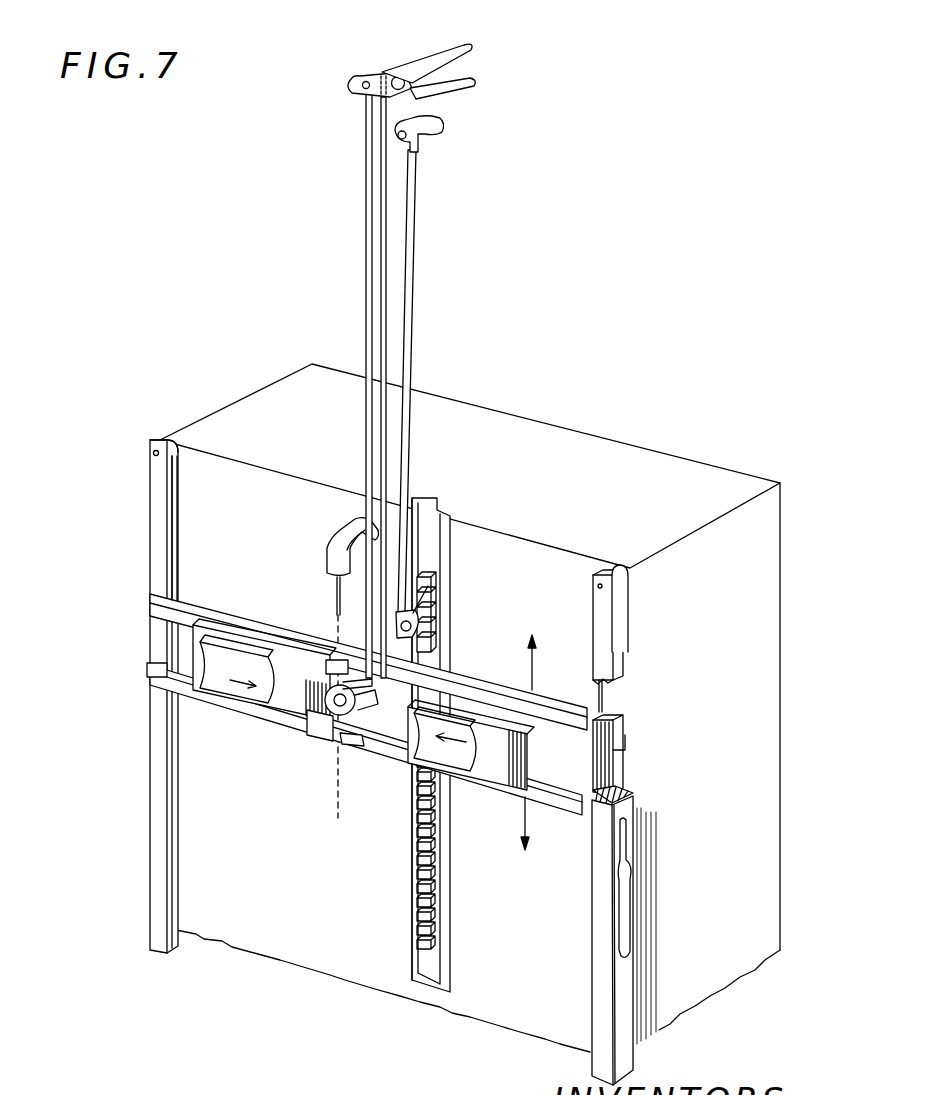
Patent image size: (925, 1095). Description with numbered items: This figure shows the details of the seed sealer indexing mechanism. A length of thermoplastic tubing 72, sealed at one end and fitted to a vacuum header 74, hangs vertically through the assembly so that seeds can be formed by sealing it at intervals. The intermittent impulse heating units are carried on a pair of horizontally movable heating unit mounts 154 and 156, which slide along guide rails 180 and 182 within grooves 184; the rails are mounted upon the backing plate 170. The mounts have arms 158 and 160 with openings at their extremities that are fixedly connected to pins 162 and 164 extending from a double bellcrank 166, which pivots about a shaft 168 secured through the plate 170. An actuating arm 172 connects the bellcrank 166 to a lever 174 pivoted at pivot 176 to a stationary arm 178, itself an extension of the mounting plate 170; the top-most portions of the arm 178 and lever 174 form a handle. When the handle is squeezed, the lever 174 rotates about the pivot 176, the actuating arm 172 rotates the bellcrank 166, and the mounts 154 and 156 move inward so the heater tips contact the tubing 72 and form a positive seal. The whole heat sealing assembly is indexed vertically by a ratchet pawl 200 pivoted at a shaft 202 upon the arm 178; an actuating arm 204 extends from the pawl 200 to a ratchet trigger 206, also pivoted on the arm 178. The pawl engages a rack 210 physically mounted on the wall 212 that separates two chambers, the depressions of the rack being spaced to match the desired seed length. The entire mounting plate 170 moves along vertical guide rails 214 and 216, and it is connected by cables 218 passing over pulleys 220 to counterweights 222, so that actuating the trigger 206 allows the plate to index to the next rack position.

The thermoplastic tubing 72 is at (336, 590).
The vacuum header 74 is at (327, 550).
The heating unit mount 154 is at (230, 707).
The heating unit mount 156 is at (480, 785).
The arm 158 is at (358, 745).
The arm 160 is at (430, 650).
The pin 162 is at (340, 722).
The pin 164 is at (340, 658).
The double bellcrank 166 is at (362, 746).
The shaft 168 is at (317, 722).
The backing plate 170 is at (614, 765).
The actuating arm 172 is at (366, 250).
The lever 174 is at (427, 62).
The pivot 176 is at (387, 72).
The stationary arm 178 is at (388, 237).
The guide rail 180 is at (150, 600).
The guide rail 182 is at (537, 712).
The groove 184 is at (153, 673).
The ratchet pawl 200 is at (412, 628).
The shaft 202 is at (430, 597).
The actuating arm 204 is at (413, 291).
The ratchet trigger 206 is at (442, 119).
The rack 210 is at (437, 910).
The wall 212 is at (533, 547).
The vertical guide rail 214 is at (640, 972).
The vertical guide rail 216 is at (150, 800).
The cable 218 is at (178, 490).
The pulley 220 is at (164, 438).
The counterweight 222 is at (630, 895).